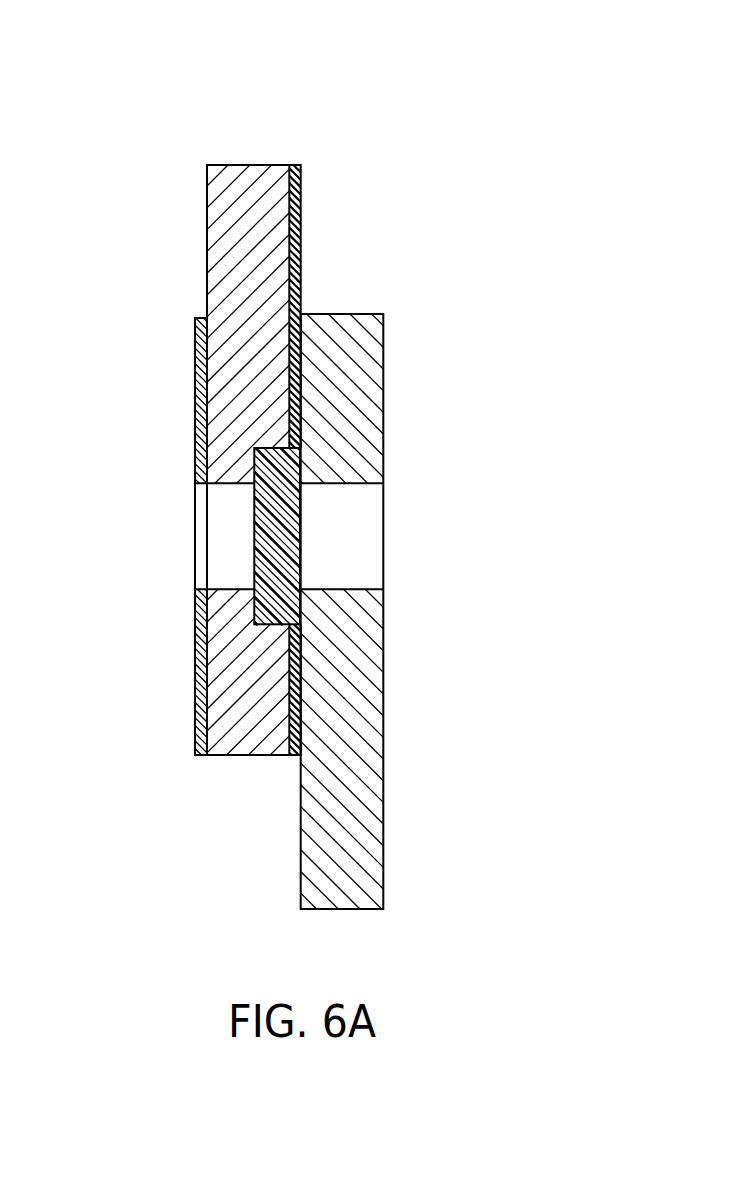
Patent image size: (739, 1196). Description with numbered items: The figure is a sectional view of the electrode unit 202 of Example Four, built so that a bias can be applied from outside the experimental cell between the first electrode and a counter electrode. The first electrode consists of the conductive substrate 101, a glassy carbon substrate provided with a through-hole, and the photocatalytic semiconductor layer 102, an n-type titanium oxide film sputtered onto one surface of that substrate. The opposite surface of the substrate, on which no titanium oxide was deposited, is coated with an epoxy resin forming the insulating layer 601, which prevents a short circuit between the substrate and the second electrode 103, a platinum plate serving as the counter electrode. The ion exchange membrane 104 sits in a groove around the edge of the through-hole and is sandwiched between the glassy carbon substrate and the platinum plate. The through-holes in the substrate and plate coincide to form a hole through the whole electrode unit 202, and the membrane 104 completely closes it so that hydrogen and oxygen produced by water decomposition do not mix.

The electrode unit 202 is at (98, 117).
The conductive substrate 101 is at (247, 192).
The photocatalytic semiconductor layer 102 is at (202, 326).
The second electrode 103 is at (360, 376).
The ion exchange membrane 104 is at (268, 523).
The insulating layer 601 is at (296, 200).